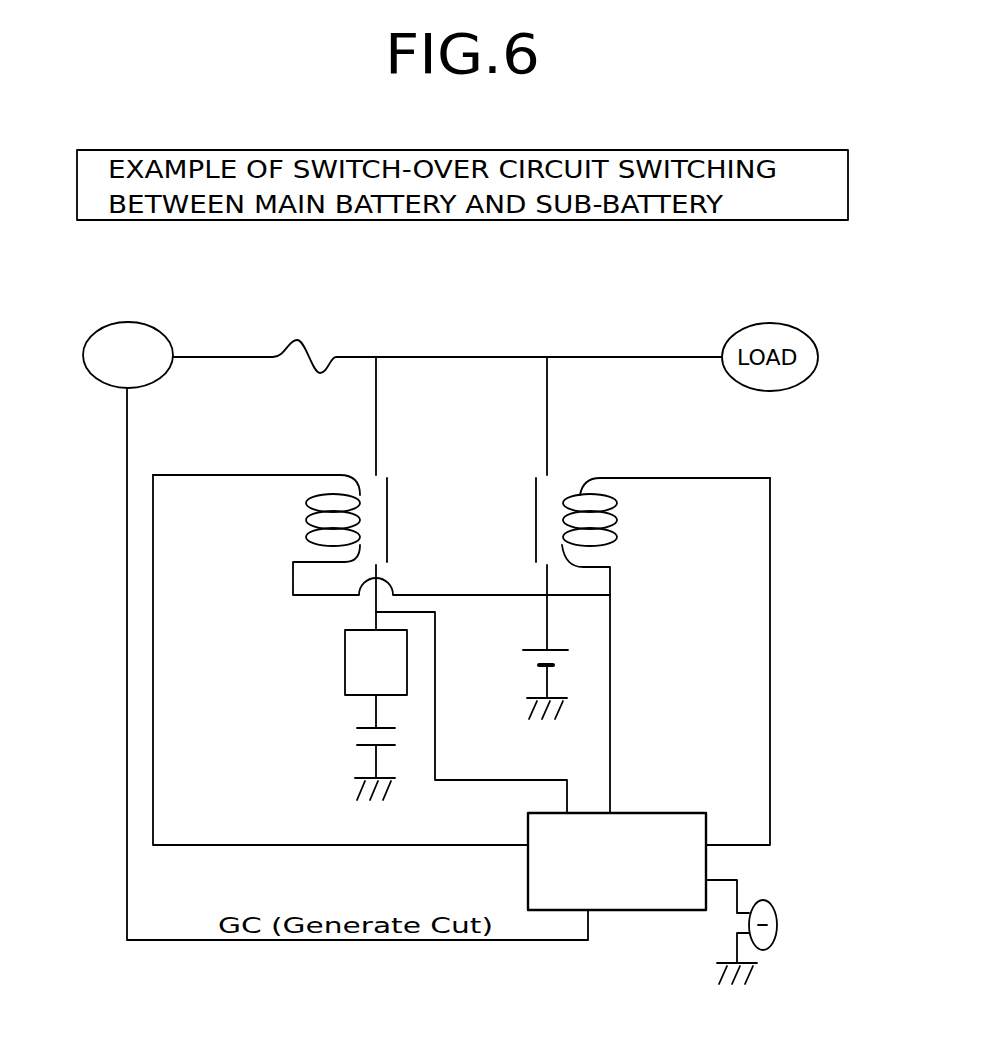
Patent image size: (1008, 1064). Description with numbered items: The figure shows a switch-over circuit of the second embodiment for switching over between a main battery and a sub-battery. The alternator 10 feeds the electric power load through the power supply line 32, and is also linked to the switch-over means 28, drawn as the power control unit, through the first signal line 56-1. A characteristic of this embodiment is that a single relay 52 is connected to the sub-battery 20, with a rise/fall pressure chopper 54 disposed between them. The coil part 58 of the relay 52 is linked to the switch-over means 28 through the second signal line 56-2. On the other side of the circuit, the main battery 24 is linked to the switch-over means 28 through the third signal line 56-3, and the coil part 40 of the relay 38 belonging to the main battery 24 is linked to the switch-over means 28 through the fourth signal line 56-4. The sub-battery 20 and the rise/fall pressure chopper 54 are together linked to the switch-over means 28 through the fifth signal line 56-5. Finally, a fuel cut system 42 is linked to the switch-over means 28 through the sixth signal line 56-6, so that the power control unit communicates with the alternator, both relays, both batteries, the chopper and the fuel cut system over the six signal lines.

The alternator 10 is at (113, 322).
The power supply line 32 is at (478, 356).
The relay 52 is at (336, 625).
The relay 38 is at (697, 601).
The coil part 58 is at (306, 503).
The coil part 40 is at (618, 540).
The rise/fall pressure chopper 54 is at (345, 630).
The sub-battery 20 is at (356, 742).
The main battery 24 is at (571, 660).
The switch-over means 28 is at (707, 863).
The fuel cut system 42 is at (778, 915).
The first signal line 56-1 is at (127, 738).
The second signal line 56-2 is at (212, 846).
The third signal line 56-3 is at (610, 722).
The fourth signal line 56-4 is at (772, 704).
The fifth signal line 56-5 is at (472, 785).
The sixth signal line 56-6 is at (720, 885).